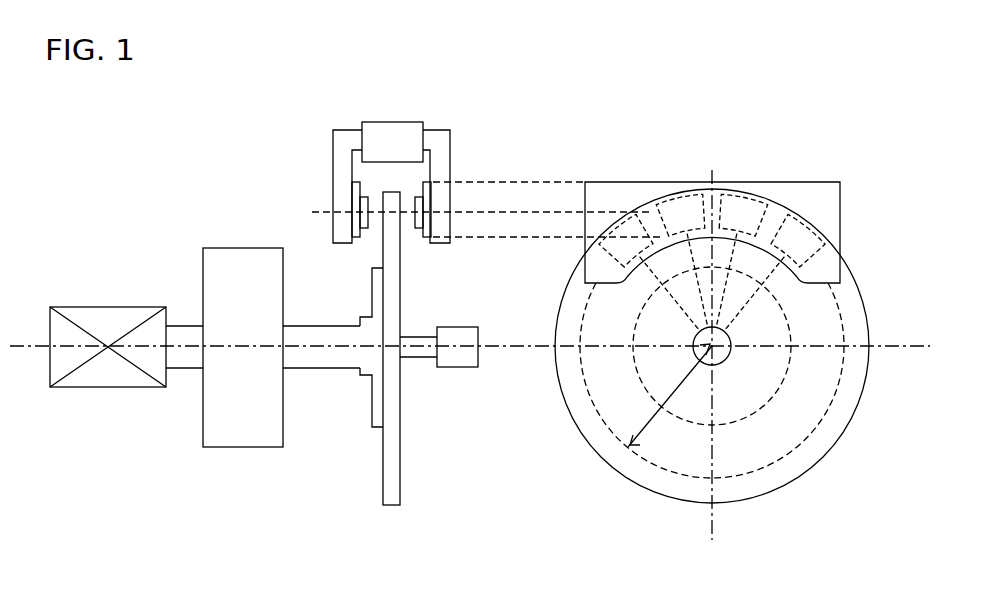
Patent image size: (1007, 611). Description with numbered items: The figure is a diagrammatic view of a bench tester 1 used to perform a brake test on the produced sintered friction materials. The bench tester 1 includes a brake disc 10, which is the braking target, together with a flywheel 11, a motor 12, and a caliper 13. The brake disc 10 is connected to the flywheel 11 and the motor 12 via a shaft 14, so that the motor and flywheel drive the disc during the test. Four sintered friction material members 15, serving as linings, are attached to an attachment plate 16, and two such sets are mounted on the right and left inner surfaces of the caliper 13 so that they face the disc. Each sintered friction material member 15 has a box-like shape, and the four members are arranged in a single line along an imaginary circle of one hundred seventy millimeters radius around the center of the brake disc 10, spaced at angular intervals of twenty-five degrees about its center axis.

The bench tester 1 is at (495, 66).
The brake disc 10 is at (398, 257).
The flywheel 11 is at (241, 262).
The motor 12 is at (107, 320).
The caliper 13 is at (392, 133).
The shaft 14 is at (323, 370).
The sintered friction material member 15 is at (362, 216).
The attachment plate 16 is at (353, 189).